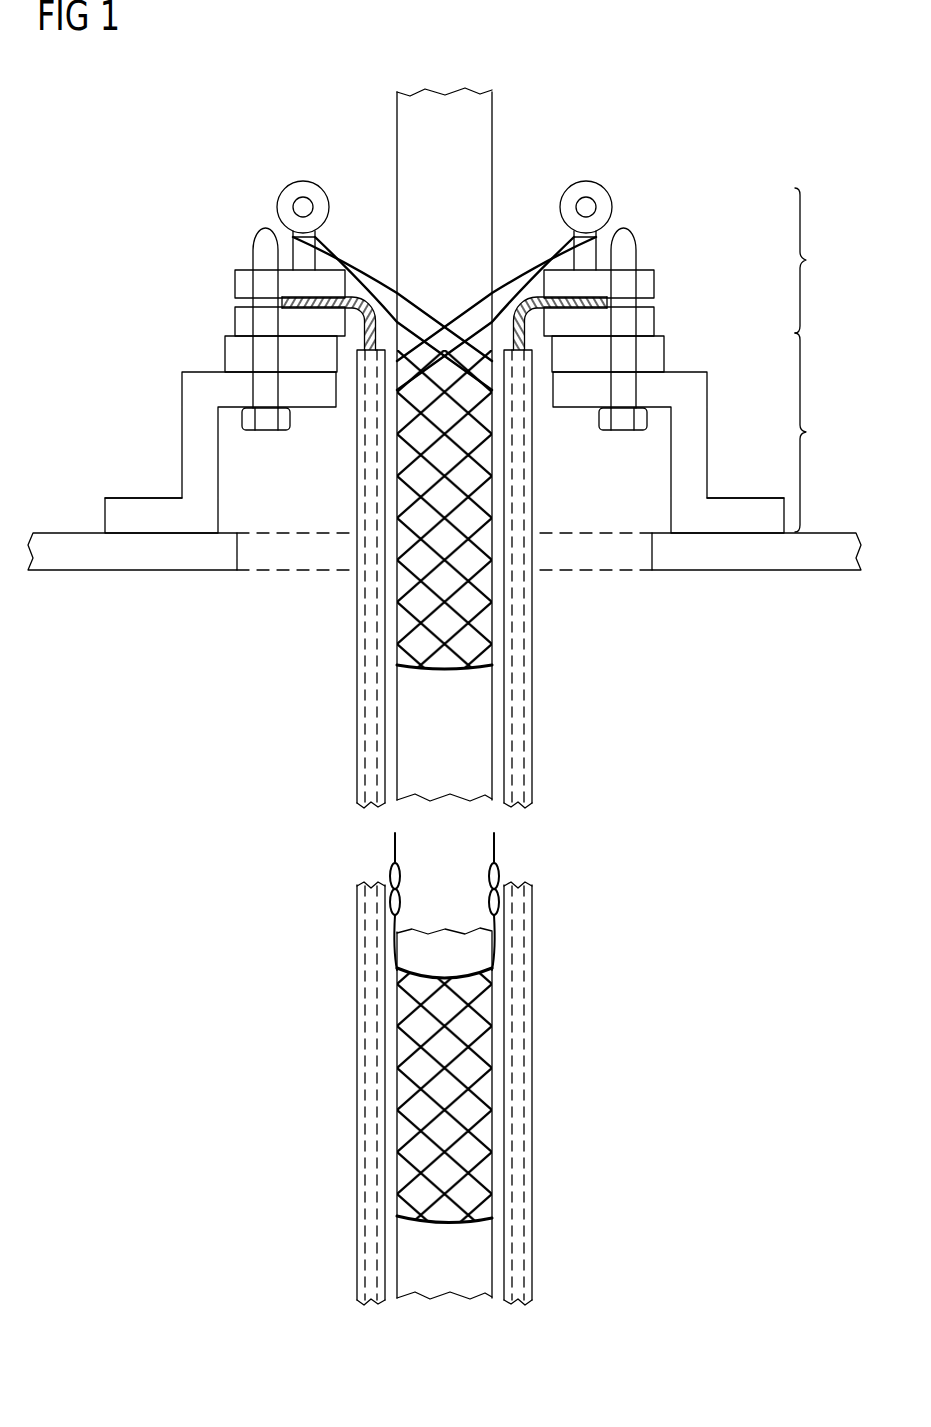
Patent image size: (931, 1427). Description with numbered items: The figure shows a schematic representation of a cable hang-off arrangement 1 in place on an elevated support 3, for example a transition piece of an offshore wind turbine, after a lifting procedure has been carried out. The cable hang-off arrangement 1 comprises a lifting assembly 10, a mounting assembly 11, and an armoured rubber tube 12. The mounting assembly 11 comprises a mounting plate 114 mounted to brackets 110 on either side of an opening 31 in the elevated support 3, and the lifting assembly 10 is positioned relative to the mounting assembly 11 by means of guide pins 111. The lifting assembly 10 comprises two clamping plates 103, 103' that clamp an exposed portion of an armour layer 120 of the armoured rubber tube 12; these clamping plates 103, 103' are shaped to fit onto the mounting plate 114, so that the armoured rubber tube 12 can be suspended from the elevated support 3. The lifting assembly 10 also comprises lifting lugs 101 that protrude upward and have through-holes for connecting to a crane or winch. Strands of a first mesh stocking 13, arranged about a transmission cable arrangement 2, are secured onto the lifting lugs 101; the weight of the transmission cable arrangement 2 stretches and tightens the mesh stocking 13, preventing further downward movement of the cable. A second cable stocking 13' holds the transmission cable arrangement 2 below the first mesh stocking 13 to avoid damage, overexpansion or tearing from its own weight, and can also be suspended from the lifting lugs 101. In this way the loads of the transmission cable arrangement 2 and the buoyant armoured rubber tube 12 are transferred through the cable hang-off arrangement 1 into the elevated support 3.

The cable hang-off arrangement 1 is at (140, 152).
The transmission cable arrangement 2 is at (437, 97).
The elevated support 3 is at (58, 545).
The lifting assembly 10 is at (818, 260).
The mounting assembly 11 is at (473, 433).
The armoured rubber tube 12 is at (365, 772).
The first mesh stocking 13 is at (444, 418).
The second cable stocking 13' is at (488, 1028).
The opening 31 is at (589, 550).
The lifting lugs 101 is at (302, 180).
The clamping plate 103 is at (480, 281).
The clamping plate 103' is at (483, 315).
The brackets 110 is at (143, 503).
The guide pins 111 is at (260, 256).
The mounting plate 114 is at (233, 354).
The armour layer 120 is at (533, 296).